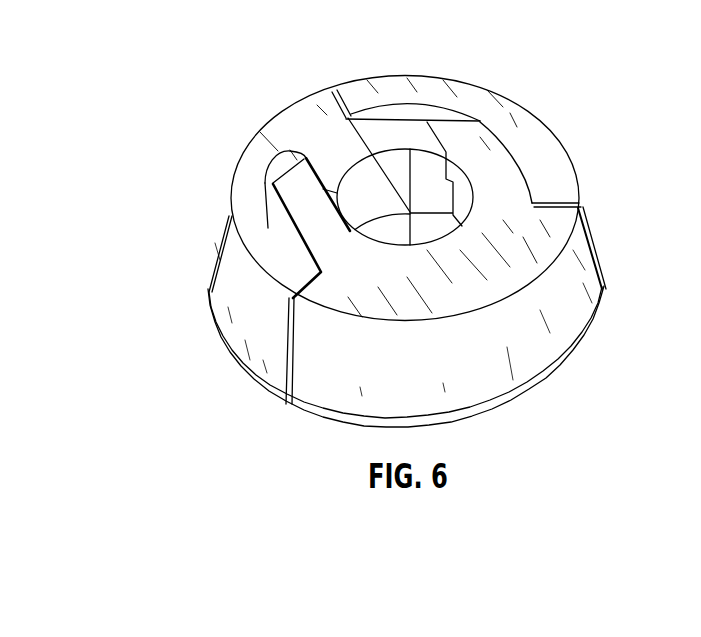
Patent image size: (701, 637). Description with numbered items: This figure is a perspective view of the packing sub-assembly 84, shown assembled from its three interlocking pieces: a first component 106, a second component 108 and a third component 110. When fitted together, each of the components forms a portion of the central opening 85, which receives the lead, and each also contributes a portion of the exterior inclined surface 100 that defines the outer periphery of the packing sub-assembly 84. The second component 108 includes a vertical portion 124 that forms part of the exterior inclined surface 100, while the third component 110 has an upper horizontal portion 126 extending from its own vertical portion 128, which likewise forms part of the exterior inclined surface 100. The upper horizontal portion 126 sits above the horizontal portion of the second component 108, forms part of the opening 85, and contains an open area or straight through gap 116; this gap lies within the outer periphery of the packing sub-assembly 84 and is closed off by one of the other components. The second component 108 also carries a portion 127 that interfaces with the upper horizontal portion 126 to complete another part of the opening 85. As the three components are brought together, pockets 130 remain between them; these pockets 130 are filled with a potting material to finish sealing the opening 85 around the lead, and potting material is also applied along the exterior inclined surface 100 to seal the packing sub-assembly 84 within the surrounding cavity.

The packing sub-assembly 84 is at (231, 110).
The opening 85 is at (351, 112).
The exterior inclined surface 100 is at (533, 347).
The first component 106 is at (563, 175).
The second component 108 is at (235, 189).
The third component 110 is at (520, 264).
The open area or straight through gap 116 is at (423, 148).
The vertical portion 124 is at (285, 275).
The upper horizontal portion 126 is at (482, 158).
The portion 127 is at (320, 148).
The vertical portion 128 is at (480, 380).
The pockets 130 is at (385, 116).